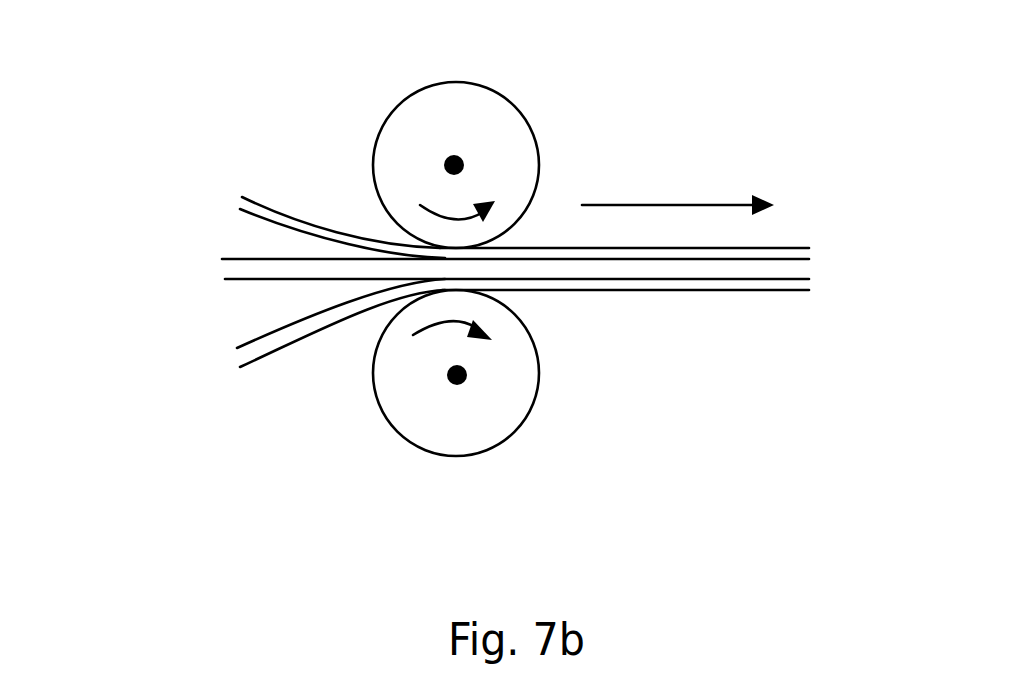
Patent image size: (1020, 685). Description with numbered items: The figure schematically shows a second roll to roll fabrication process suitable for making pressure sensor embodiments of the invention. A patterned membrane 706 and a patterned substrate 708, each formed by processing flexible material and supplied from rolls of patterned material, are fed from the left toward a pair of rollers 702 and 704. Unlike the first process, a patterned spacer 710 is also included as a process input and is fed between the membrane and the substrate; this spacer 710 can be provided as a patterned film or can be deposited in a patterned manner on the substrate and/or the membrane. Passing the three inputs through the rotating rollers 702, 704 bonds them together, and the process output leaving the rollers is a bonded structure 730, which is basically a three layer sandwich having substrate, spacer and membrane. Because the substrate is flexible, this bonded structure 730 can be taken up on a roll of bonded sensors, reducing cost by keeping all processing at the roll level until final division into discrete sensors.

The roller 702 is at (427, 103).
The roller 704 is at (448, 438).
The patterned membrane 706 is at (272, 215).
The patterned substrate 708 is at (279, 347).
The patterned spacer 710 is at (258, 273).
The bonded structure 730 is at (670, 283).